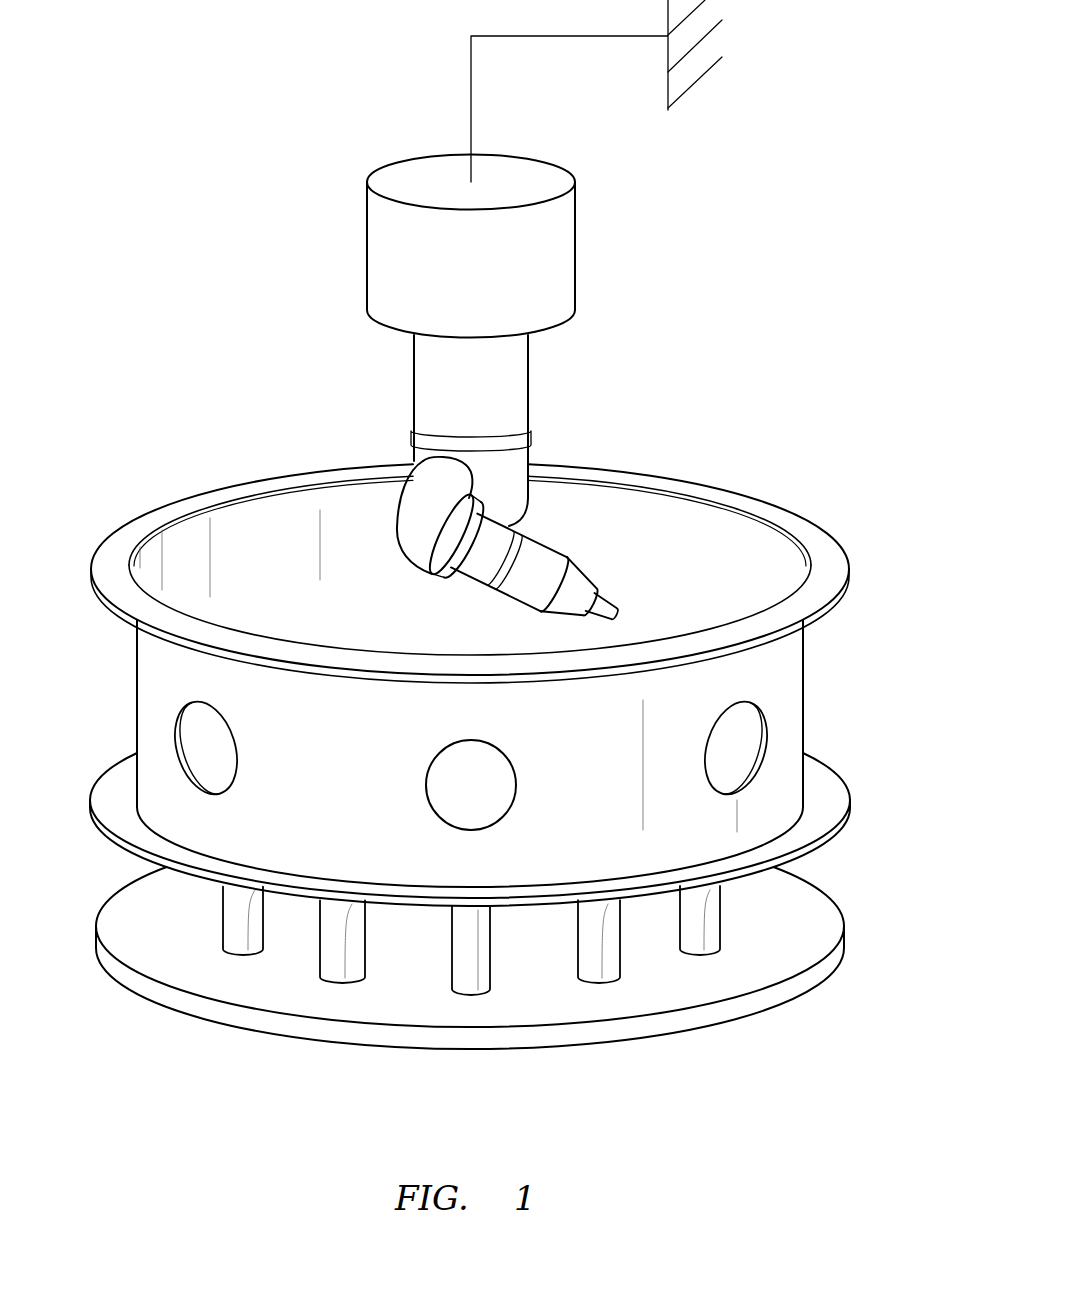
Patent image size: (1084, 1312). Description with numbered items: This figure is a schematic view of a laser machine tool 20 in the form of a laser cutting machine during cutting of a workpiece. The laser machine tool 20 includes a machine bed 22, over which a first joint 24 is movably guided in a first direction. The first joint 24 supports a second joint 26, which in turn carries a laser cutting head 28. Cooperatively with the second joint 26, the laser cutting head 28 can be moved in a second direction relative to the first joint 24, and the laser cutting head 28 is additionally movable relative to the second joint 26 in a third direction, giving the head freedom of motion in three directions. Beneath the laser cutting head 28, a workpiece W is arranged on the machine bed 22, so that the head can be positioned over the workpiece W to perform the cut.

The laser machine tool 20 is at (691, 290).
The machine bed 22 is at (829, 930).
The first joint 24 is at (437, 428).
The second joint 26 is at (443, 577).
The laser cutting head 28 is at (566, 553).
The workpiece W is at (792, 667).